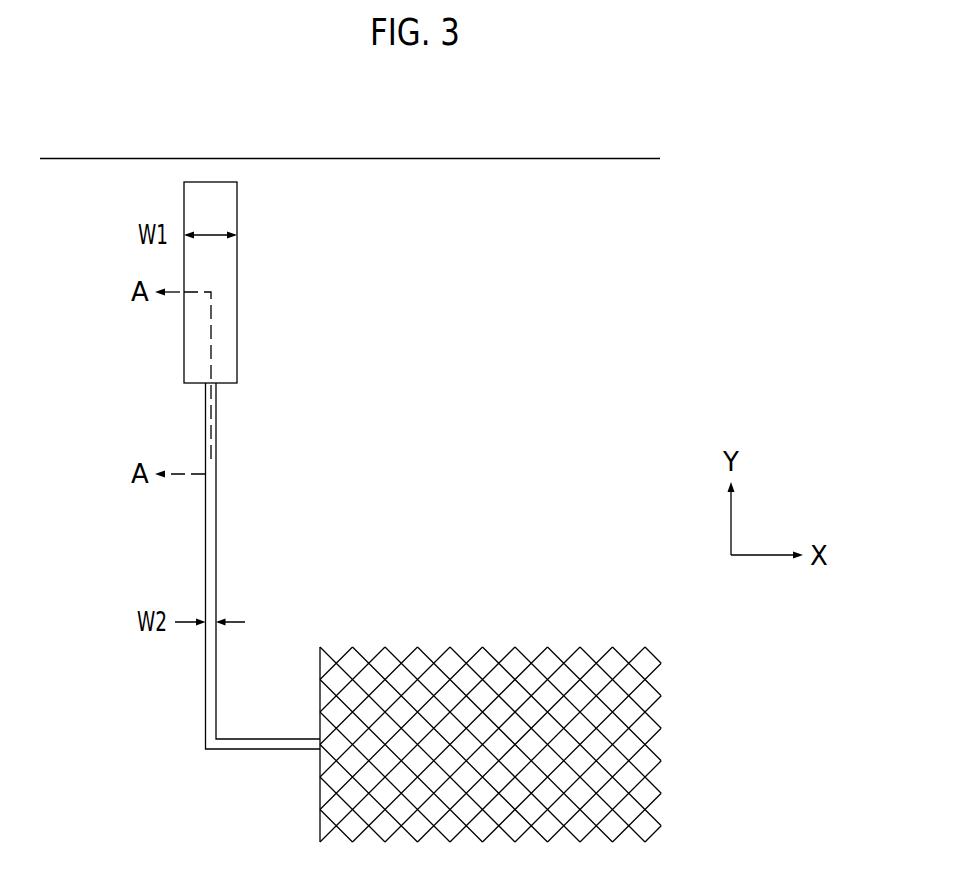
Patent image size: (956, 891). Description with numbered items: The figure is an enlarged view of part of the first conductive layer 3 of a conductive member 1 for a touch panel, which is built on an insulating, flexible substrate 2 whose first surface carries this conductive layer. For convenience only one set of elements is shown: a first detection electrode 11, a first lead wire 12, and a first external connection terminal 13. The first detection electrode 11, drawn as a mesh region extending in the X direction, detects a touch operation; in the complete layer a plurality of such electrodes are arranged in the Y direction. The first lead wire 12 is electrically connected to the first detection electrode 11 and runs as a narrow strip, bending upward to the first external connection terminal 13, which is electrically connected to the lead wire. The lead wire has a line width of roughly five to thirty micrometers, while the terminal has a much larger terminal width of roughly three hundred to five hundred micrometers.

The conductive member for a touch panel 1 is at (622, 137).
The substrate 2 is at (477, 206).
The first conductive layer 3 is at (125, 548).
The first detection electrode 11 is at (320, 808).
The first lead wire 12 is at (210, 713).
The first external connection terminal 13 is at (212, 207).